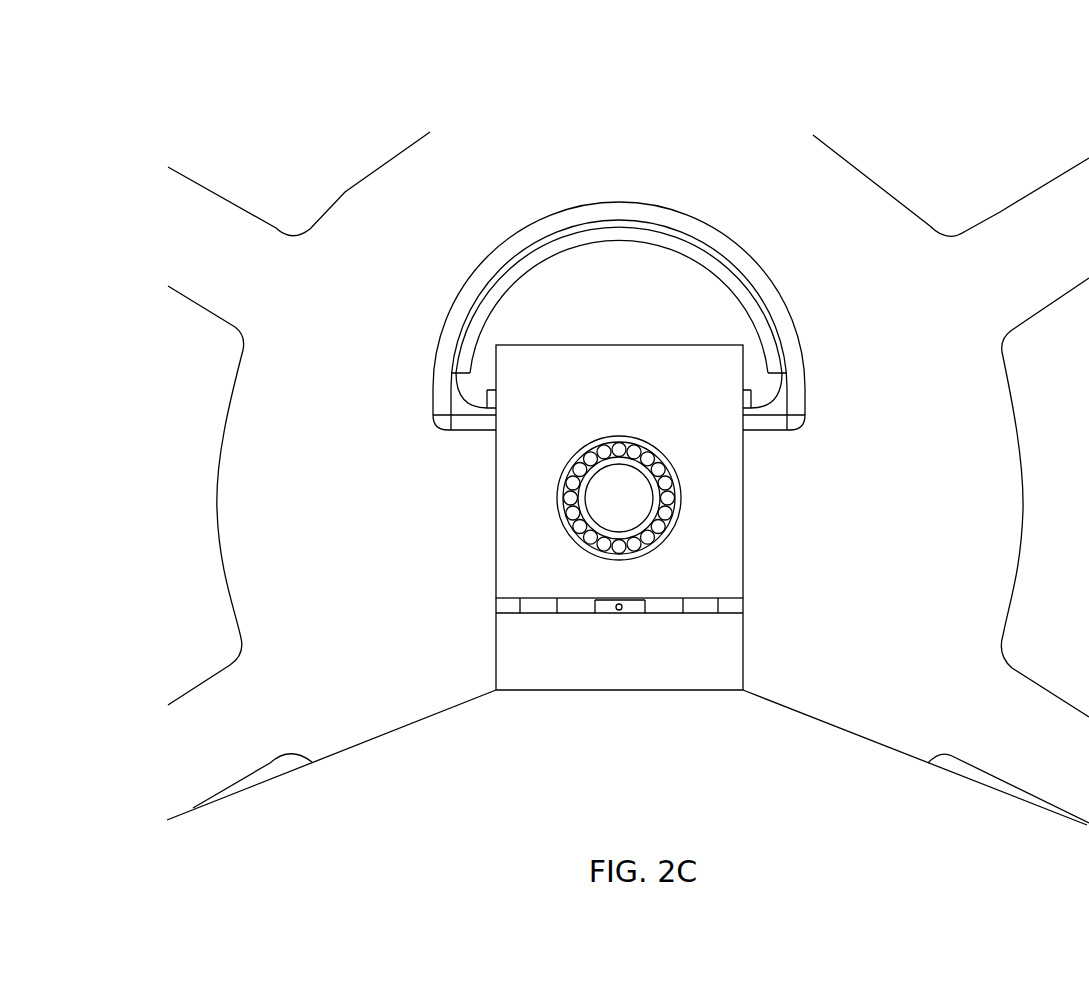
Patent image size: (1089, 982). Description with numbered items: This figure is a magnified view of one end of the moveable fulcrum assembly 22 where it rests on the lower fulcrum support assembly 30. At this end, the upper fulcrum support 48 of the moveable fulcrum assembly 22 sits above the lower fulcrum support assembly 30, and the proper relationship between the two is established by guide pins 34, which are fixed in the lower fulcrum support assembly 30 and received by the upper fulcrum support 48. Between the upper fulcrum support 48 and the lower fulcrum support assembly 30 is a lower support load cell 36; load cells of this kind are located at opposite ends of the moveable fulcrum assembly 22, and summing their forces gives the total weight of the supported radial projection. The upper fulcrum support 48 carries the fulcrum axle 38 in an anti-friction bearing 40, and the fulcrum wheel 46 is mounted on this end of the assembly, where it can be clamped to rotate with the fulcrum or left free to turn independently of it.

The moveable fulcrum assembly 22 is at (922, 146).
The lower fulcrum support assembly 30 is at (956, 764).
The guide pin 34 is at (530, 609).
The lower support load cell 36 is at (607, 608).
The fulcrum axle 38 is at (627, 482).
The anti-friction bearing 40 is at (665, 519).
The fulcrum wheel 46 is at (973, 456).
The upper fulcrum support 48 is at (517, 452).